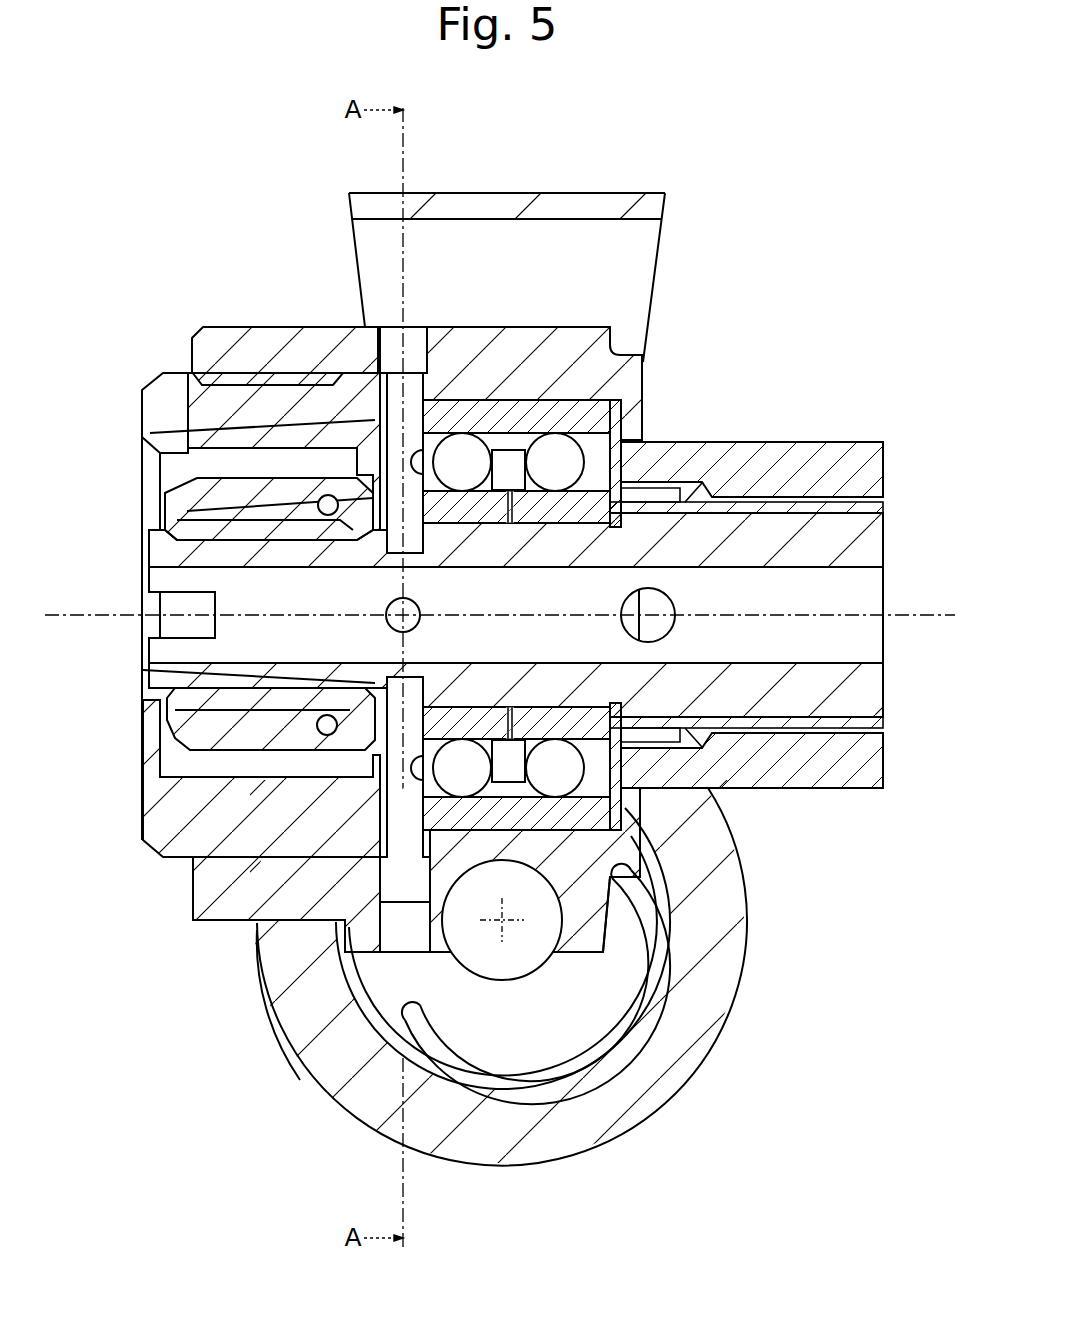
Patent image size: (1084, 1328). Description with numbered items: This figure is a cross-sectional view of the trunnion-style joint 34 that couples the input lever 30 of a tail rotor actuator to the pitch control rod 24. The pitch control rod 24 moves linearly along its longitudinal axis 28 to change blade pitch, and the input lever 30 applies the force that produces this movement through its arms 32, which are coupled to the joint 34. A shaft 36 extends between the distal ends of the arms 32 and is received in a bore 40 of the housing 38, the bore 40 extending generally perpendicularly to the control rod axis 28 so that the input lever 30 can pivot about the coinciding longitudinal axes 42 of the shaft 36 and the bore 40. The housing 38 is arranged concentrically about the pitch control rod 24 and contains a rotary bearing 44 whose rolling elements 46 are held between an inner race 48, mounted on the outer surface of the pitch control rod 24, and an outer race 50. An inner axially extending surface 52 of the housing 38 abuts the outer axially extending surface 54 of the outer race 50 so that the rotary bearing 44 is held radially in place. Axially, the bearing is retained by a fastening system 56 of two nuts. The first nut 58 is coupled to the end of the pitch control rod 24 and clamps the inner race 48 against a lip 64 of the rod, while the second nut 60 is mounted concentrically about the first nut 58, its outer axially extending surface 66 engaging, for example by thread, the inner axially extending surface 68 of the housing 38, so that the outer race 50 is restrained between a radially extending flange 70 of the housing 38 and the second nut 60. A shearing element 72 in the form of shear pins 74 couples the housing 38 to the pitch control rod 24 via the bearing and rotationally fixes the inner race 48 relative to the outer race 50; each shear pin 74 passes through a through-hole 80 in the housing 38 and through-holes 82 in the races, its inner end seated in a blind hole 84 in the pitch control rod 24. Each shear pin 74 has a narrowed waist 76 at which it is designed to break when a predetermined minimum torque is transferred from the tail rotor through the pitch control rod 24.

The pitch control rod 24 is at (845, 690).
The longitudinal axis 28 is at (85, 612).
The input lever 30 is at (630, 257).
The arms 32 is at (728, 902).
The trunnion-style joint 34 is at (211, 1069).
The shaft 36 is at (550, 922).
The housing 38 is at (215, 922).
The bore 40 is at (552, 964).
The longitudinal axes 42 is at (507, 925).
The rotary bearing 44 is at (617, 775).
The rolling elements 46 is at (566, 455).
The inner race 48 is at (600, 478).
The outer race 50 is at (487, 420).
The inner axially extending surface 52 is at (540, 407).
The outer axially extending surface 54 is at (452, 400).
The fastening system 56 is at (97, 347).
The first nut 58 is at (190, 738).
The second nut 60 is at (158, 402).
The lip 64 is at (610, 513).
The outer axially extending surface 66 is at (225, 387).
The inner axially extending surface 68 is at (287, 387).
The radially extending flange 70 is at (627, 382).
The shearing element 72 is at (395, 387).
The shear pins 74 is at (335, 372).
The narrowed waist 76 is at (393, 770).
The through-hole 80 is at (383, 945).
The through-holes 82 is at (150, 433).
The blind hole 84 is at (143, 670).